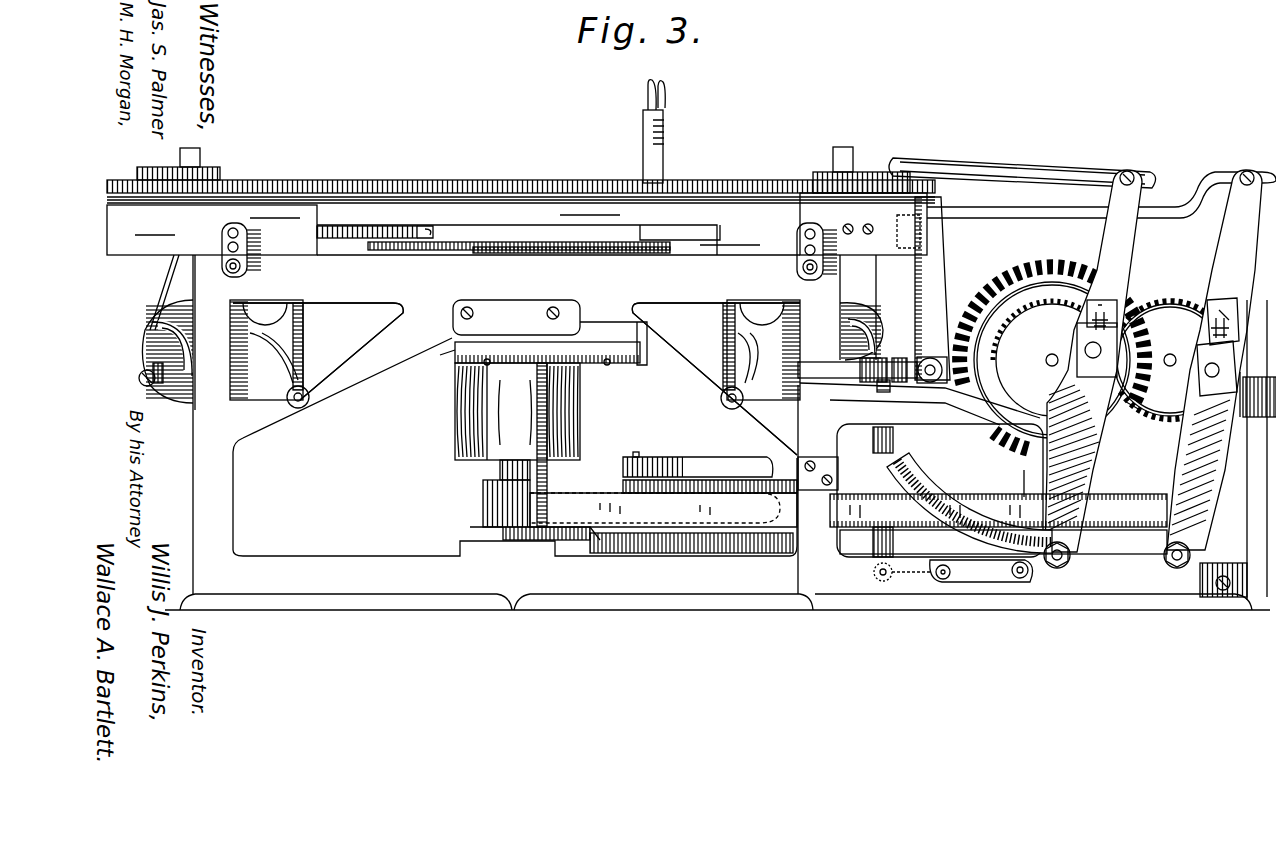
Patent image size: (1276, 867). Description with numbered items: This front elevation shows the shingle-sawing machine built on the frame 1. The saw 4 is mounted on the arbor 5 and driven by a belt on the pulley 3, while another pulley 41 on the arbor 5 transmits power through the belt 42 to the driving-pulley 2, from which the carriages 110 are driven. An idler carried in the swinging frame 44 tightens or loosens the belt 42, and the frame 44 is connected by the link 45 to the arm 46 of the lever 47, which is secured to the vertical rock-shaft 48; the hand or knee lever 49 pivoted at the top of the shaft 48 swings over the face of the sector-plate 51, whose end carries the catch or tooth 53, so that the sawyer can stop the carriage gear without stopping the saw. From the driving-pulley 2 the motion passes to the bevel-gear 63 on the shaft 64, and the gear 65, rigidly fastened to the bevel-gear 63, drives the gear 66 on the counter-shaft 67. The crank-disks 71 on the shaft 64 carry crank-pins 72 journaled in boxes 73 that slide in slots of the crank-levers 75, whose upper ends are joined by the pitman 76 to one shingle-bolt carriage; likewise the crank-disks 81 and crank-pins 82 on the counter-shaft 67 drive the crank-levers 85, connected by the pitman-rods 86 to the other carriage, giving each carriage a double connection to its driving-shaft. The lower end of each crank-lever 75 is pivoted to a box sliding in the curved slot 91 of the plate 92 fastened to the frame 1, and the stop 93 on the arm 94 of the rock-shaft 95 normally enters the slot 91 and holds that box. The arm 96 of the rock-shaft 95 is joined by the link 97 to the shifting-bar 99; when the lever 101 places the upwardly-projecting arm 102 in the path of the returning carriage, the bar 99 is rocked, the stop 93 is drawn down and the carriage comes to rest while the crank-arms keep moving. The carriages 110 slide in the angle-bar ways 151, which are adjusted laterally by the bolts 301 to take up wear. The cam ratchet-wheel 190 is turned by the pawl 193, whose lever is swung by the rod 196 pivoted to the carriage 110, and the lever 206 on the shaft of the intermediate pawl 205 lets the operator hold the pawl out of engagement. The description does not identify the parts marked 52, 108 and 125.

The frame 1 is at (717, 432).
The driving-pulley 2 is at (1016, 483).
The pulley 3 is at (517, 411).
The saw 4 is at (588, 244).
The saw-arbor 5 is at (510, 468).
The pulley 41 is at (499, 503).
The belt 42 is at (663, 510).
The swinging frame 44 is at (710, 468).
The link 45 is at (691, 544).
The arm 46 is at (535, 542).
The lever 47 is at (546, 532).
The vertical rock-shaft 48 is at (553, 445).
The hand or knee lever 49 is at (442, 359).
The sector-plate 51 is at (550, 332).
The pin 52 is at (489, 370).
The catch or tooth 53 is at (614, 369).
The bevel-gear 63 is at (1052, 358).
The shaft 64 is at (1040, 358).
The gear 65 is at (1052, 323).
The gear 66 is at (1171, 349).
The counter-shaft 67 is at (1160, 356).
The crank-disks 71 is at (1052, 360).
The crank-pins 72 is at (1097, 338).
The boxes 73 is at (1218, 347).
The crank-levers 75 is at (1093, 361).
The pitman 76 is at (1022, 178).
The crank-disks 81 is at (1170, 360).
The crank-pins 82 is at (1221, 372).
The crank-levers 85 is at (1214, 360).
The pitman-rods 86 is at (1101, 200).
The curved slot 91 is at (998, 510).
The plate 92 is at (969, 503).
The stop 93 is at (1041, 561).
The arm 94 is at (981, 571).
The rock-shaft 95 is at (953, 570).
The arm 96 is at (902, 572).
The link 97 is at (1003, 542).
The shifting-bar 99 is at (932, 358).
The lever 101 is at (857, 396).
The upwardly-projecting arm 102 is at (932, 288).
The pedestal 108 is at (1205, 450).
The carriages 110 is at (523, 158).
The latch 125 is at (634, 131).
The guide-bars 151 is at (853, 224).
The ratchet-wheel 190 is at (515, 350).
The pawl 193 is at (160, 329).
The link or rod 196 is at (521, 217).
The intermediate pawl 205 is at (518, 356).
The lever 206 is at (516, 379).
The bolts 301 is at (262, 272).